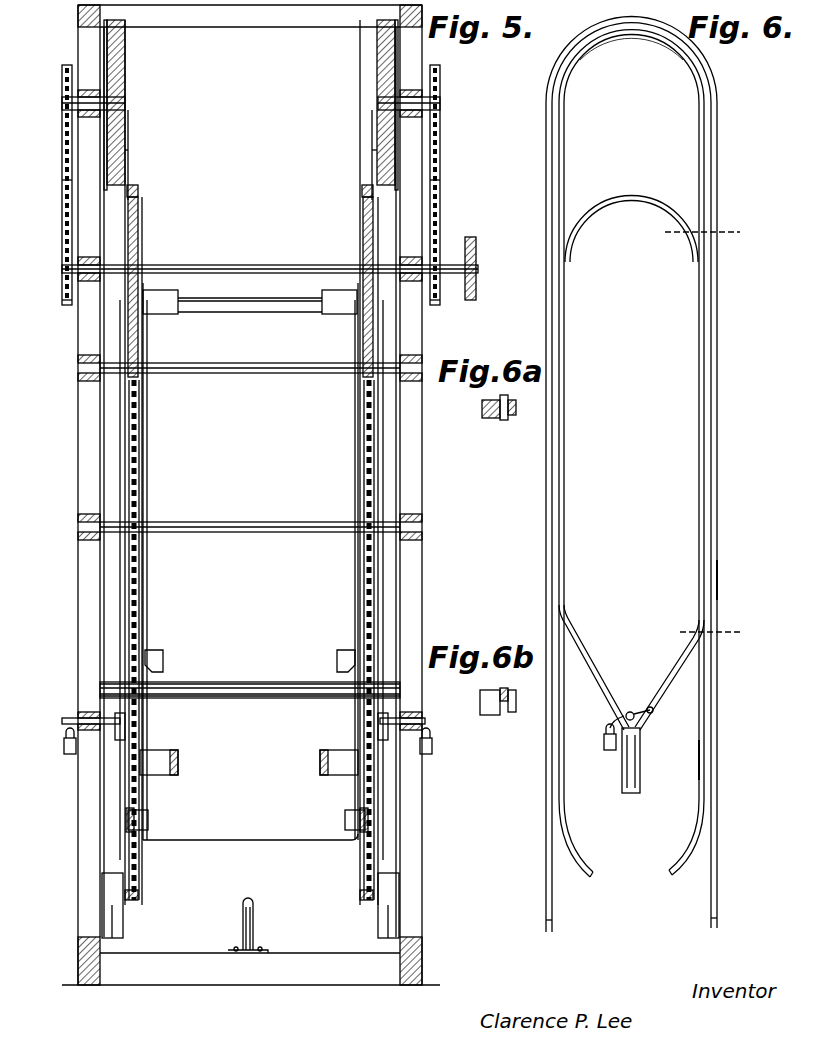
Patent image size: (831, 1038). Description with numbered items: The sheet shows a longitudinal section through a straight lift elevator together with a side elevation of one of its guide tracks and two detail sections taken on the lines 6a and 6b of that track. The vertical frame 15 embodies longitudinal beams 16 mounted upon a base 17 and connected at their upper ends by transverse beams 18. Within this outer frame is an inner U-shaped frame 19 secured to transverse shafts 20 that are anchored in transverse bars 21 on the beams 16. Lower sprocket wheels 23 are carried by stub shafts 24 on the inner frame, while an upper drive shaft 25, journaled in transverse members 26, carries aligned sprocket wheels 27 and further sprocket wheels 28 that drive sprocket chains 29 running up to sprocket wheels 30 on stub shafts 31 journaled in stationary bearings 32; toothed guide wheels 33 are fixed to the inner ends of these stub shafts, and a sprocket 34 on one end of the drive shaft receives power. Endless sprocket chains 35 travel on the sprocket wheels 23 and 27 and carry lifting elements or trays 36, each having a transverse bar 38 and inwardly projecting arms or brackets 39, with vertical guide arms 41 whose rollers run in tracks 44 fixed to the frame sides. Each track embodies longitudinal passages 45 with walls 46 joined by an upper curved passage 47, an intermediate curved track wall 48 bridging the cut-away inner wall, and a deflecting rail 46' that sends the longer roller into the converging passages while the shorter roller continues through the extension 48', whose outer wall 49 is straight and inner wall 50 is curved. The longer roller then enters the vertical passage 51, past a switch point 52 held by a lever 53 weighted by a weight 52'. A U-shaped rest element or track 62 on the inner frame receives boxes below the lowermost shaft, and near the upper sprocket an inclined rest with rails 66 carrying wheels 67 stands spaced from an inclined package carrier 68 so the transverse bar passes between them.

In FIG. 5, the vertical frame 15 is at (80, 455).
In FIG. 5, the longitudinal beams 16 is at (80, 502).
In FIG. 5, the base 17 is at (422, 962).
In FIG. 5, the transverse beams 18 is at (237, 12).
In FIG. 5, the inner U-shaped frame 19 is at (150, 598).
In FIG. 5, the transverse shafts 20 is at (244, 374).
In FIG. 5, the transverse bars 21 is at (78, 354).
In FIG. 5, the sprocket wheels 23 is at (140, 893).
In FIG. 5, the stub shafts 24 is at (150, 820).
In FIG. 5, the upper drive shaft 25 is at (250, 266).
In FIG. 5, the transverse members 26 is at (78, 258).
In FIG. 5, the sprocket wheels 27 is at (140, 245).
In FIG. 5, the sprocket wheels 28 is at (67, 305).
In FIG. 5, the sprocket chains 29 is at (62, 172).
In FIG. 5, the sprocket wheels 30 is at (62, 86).
In FIG. 5, the stub shafts 31 is at (92, 103).
In FIG. 5, the stationary bearings 32 is at (100, 113).
In FIG. 5, the toothed guide wheels 33 is at (118, 80).
In FIG. 5, the sprocket 34 is at (476, 288).
In FIG. 5, the sprocket chains 35 is at (120, 412).
In FIG. 5, the lifting elements or trays 36 is at (200, 682).
In FIG. 5, the transverse bar 38 is at (268, 668).
In FIG. 5, the inwardly projecting arms or brackets 39 is at (160, 650).
In FIG. 5, the guide arms 41 is at (130, 135).
In FIG. 5, the tracks 44 is at (125, 595).
In FIG. 6, the tracks 44 is at (718, 578).
In FIG. 6, the longitudinal passages 45 is at (565, 460).
In FIG. 6, the walls 46 is at (668, 415).
In FIG. 6A, the walls 46 is at (485, 424).
In FIG. 6B, the walls 46 is at (489, 719).
In FIG. 6, the deflecting rail 46' is at (666, 657).
In FIG. 6B, the deflecting rail 46' is at (518, 679).
In FIG. 5, the curved passage 47 is at (125, 22).
In FIG. 6, the curved passage 47 is at (630, 30).
In FIG. 5, the intermediate curved track wall 48 is at (250, 173).
In FIG. 6, the intermediate curved track wall 48 is at (599, 471).
In FIG. 6A, the intermediate curved track wall 48 is at (493, 426).
In FIG. 6, the extension 48' is at (735, 761).
In FIG. 5, the outer wall 49 is at (112, 938).
In FIG. 6, the outer wall 49 is at (553, 906).
In FIG. 5, the inner wall 50 is at (102, 878).
In FIG. 6, the inner wall 50 is at (678, 866).
In FIG. 6, the vertical passage 51 is at (640, 780).
In FIG. 5, the switch point 52 is at (251, 728).
In FIG. 6, the switch point 52 is at (660, 731).
In FIG. 5, the weight 52' is at (240, 757).
In FIG. 6, the weight 52' is at (600, 751).
In FIG. 5, the lever 53 is at (64, 718).
In FIG. 6, the lever 53 is at (622, 710).
In FIG. 5, the U-shaped rest element or track 62 is at (180, 762).
In FIG. 5, the rails 66 is at (172, 292).
In FIG. 5, the rotatable elements or wheels 67 is at (328, 290).
In FIG. 5, the inclined package carrier 68 is at (190, 312).
In FIG. 6, the section line 6a— 6a is at (704, 233).
In FIG. 6, the section line 6b— 6b is at (710, 625).